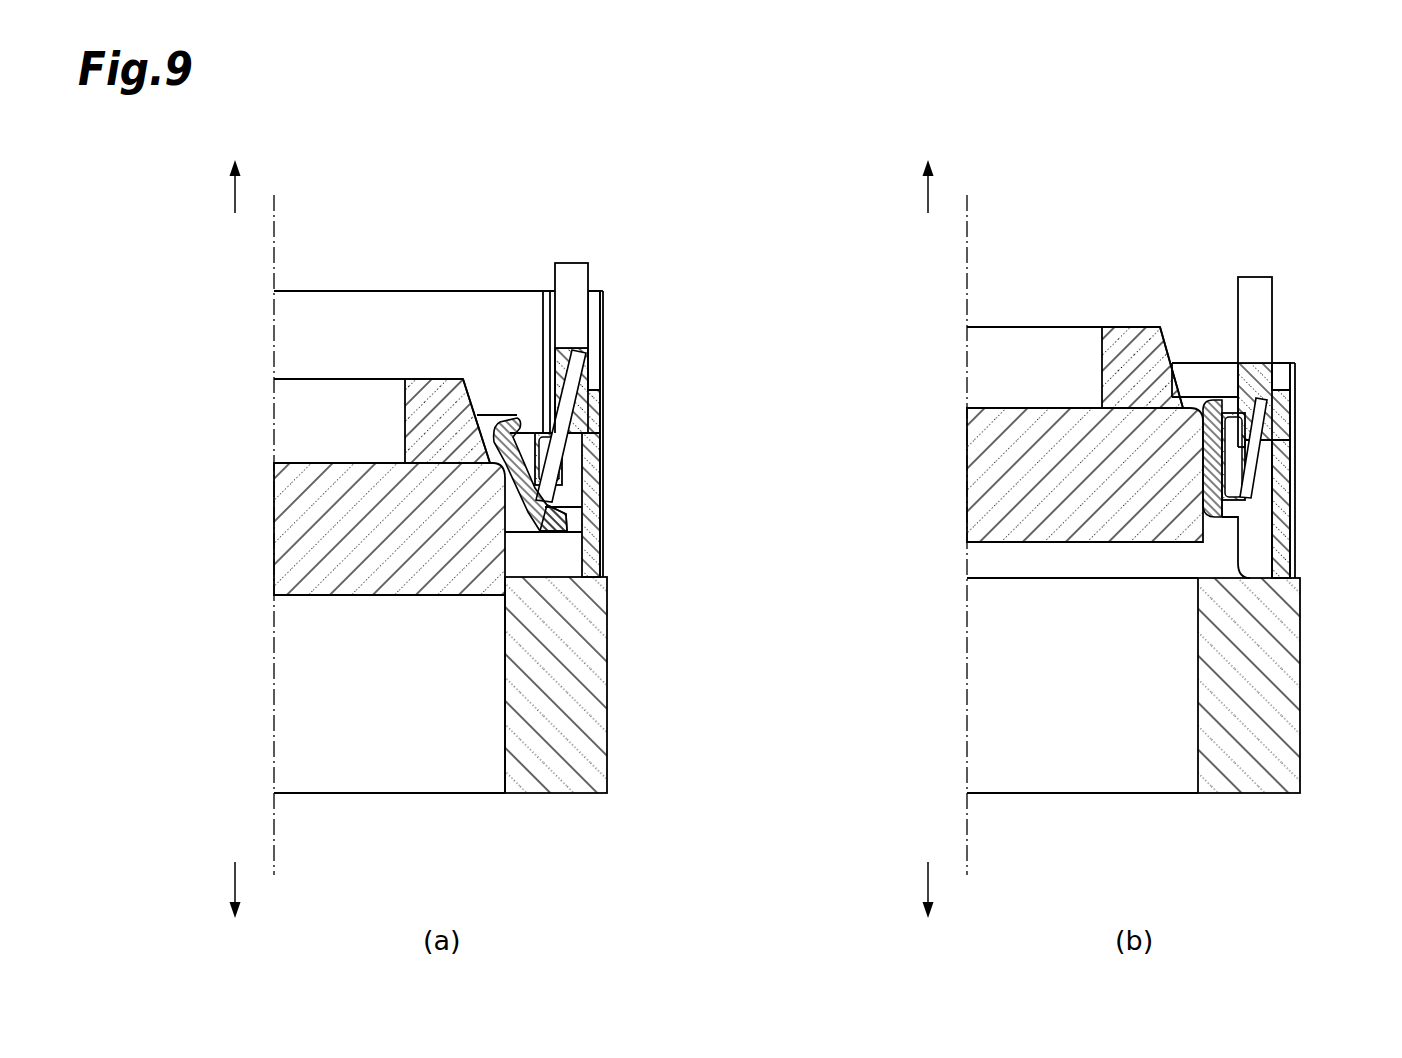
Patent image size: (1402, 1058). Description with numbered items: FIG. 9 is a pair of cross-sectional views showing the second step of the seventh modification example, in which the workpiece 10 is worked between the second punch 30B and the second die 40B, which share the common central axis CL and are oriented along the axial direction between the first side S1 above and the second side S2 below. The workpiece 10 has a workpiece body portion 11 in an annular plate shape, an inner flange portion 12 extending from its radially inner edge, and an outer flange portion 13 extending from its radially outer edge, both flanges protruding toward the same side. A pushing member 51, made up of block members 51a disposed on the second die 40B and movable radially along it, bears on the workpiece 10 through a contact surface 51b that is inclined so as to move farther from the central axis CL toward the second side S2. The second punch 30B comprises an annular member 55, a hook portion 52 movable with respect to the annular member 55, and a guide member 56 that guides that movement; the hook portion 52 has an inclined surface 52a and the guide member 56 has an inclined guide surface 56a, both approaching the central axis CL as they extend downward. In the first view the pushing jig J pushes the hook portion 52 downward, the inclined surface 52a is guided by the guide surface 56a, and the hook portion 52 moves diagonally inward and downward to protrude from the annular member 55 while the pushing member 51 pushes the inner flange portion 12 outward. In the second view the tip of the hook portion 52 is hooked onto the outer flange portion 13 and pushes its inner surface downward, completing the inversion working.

The workpiece 10 is at (482, 560).
The workpiece body portion 11 is at (533, 498).
The inner flange portion 12 is at (522, 430).
The outer flange portion 13 is at (560, 522).
The second punch 30B is at (603, 303).
The second die 40B is at (360, 573).
The pushing member 51 is at (728, 348).
The block member 51a is at (425, 410).
The contact surface 51b is at (481, 392).
The hook portion 52 is at (577, 372).
The inclined surface 52a is at (577, 417).
The annular member 55 is at (603, 333).
The guide member 56 is at (593, 523).
The guide surface 56a is at (579, 392).
The pushing jig J is at (572, 278).
The central axis CL is at (275, 230).
The first side S1 is at (235, 197).
The second side S2 is at (235, 887).